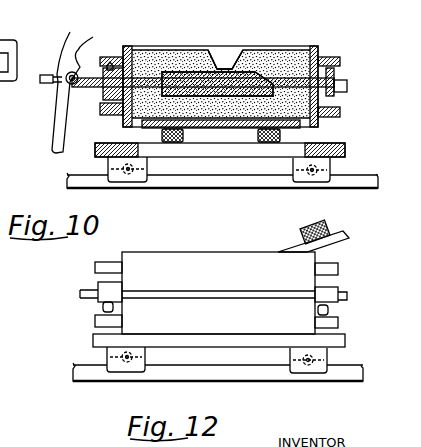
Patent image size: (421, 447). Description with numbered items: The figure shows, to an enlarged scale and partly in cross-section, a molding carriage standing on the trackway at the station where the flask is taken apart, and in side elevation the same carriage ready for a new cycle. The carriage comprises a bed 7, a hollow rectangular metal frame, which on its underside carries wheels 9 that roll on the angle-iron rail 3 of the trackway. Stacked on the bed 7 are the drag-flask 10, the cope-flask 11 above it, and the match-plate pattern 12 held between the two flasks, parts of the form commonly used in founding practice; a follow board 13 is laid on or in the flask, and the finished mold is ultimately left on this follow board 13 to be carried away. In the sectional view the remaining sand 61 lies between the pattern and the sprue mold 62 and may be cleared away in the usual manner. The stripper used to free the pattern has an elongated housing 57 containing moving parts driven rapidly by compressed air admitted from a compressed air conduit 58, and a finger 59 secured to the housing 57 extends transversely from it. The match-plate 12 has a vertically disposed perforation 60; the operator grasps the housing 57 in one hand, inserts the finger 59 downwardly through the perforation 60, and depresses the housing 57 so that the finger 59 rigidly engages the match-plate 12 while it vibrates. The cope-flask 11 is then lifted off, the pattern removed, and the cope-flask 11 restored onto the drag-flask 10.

In FIG. 12, the rail 3 is at (356, 374).
In FIG. 12, the bed 7 is at (337, 340).
In FIG. 12, the wheels 9 is at (117, 355).
In FIG. 10, the drag-flask 10 is at (320, 103).
In FIG. 12, the drag-flask 10 is at (163, 267).
In FIG. 10, the cope-flask 11 is at (323, 53).
In FIG. 12, the cope-flask 11 is at (207, 312).
In FIG. 10, the match-plate pattern 12 is at (171, 72).
In FIG. 12, the match-plate pattern 12 is at (185, 293).
In FIG. 10, the follow board 13 is at (300, 131).
In FIG. 12, the follow board 13 is at (300, 247).
In FIG. 10, the housing 57 is at (48, 84).
In FIG. 10, the compressed air conduit 58 is at (55, 133).
In FIG. 10, the finger 59 is at (95, 85).
In FIG. 10, the perforation 60 is at (100, 66).
In FIG. 10, the remaining sand 61 is at (222, 72).
In FIG. 10, the sprue mold 62 is at (215, 62).